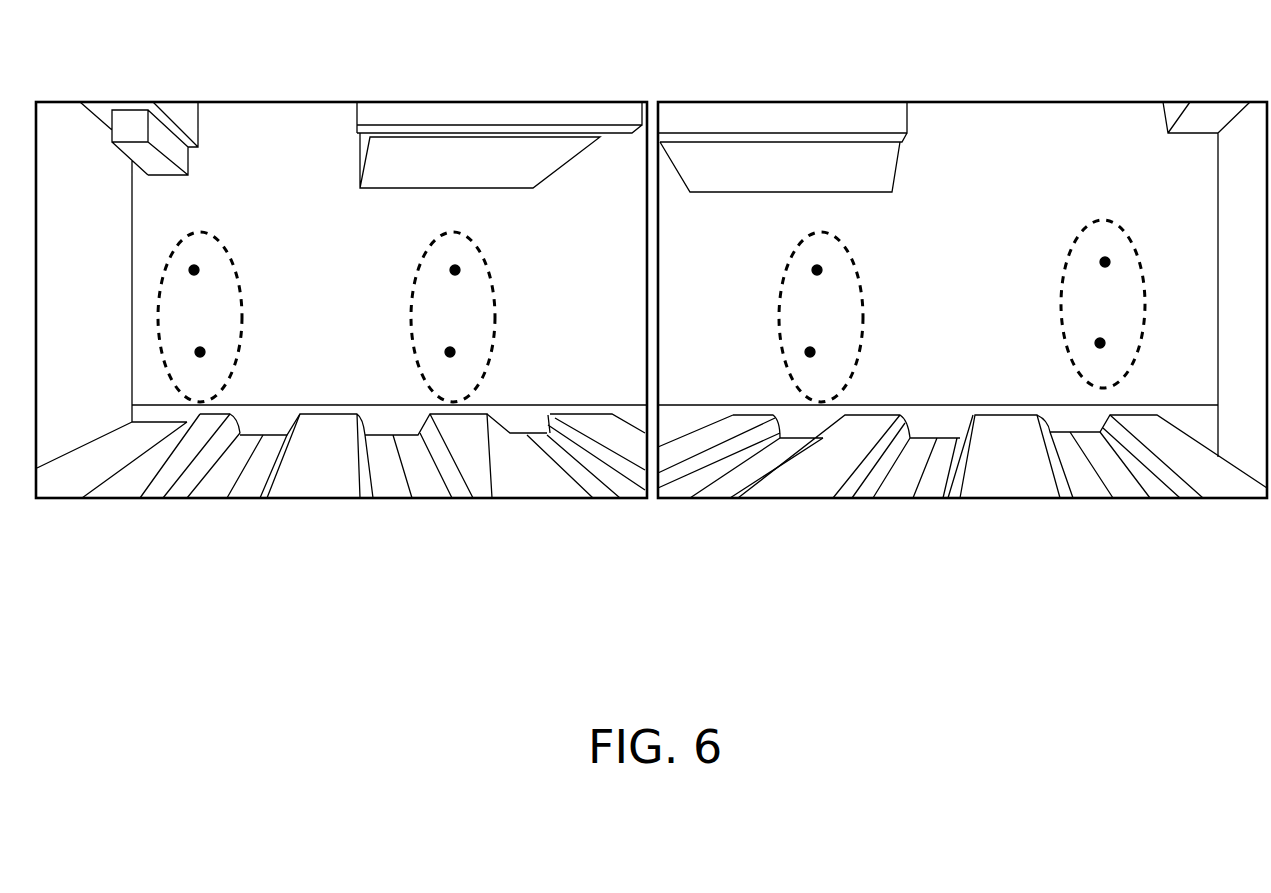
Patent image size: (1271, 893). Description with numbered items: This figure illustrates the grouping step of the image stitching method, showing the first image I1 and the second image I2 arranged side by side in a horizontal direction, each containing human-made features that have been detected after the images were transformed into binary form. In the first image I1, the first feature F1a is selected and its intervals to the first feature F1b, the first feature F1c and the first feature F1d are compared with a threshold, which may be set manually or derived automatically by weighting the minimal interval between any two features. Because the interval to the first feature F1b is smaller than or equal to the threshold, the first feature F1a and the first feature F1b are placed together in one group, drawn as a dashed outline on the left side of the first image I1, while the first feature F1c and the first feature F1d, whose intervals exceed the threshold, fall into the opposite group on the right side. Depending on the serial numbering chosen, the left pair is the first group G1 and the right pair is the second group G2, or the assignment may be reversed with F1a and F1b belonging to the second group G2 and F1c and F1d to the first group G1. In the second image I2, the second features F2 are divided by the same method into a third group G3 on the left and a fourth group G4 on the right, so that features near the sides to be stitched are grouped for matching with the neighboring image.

The first image I1 is at (341, 348).
The second image I2 is at (962, 347).
The first feature F1a is at (200, 352).
The first feature F1b is at (194, 270).
The first feature F1c is at (455, 270).
The first feature F1d is at (450, 352).
The second feature F2 is at (817, 270).
The first group G1 is at (242, 310).
The second group G2 is at (495, 310).
The third group G3 is at (863, 310).
The fourth group G4 is at (1062, 305).